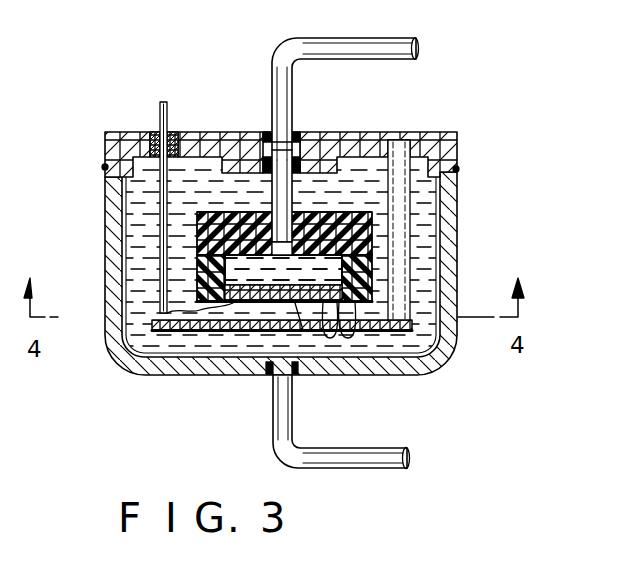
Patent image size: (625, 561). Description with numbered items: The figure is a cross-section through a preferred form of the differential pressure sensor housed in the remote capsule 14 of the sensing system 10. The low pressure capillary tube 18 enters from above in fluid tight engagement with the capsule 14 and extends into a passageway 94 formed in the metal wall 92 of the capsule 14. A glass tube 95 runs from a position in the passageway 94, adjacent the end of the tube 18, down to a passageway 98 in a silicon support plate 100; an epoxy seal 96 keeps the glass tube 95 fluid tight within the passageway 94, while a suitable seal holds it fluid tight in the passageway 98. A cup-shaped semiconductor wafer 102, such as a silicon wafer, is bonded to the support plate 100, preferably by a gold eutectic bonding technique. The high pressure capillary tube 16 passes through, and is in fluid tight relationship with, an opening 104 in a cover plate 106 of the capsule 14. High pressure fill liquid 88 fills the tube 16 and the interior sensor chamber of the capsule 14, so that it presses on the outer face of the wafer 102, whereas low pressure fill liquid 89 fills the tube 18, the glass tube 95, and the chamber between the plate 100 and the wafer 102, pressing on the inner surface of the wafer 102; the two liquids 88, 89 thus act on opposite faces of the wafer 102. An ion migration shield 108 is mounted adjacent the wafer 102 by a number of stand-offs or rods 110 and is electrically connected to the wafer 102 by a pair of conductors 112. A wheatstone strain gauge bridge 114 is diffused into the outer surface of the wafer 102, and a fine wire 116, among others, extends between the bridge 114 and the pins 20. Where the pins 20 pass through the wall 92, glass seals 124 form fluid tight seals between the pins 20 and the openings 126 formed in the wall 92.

The calibration apparatus 10 is at (253, 240).
The capsule 14 is at (462, 237).
The high pressure capillary tube 16 is at (370, 469).
The low pressure capillary tube 18 is at (329, 130).
The pins 20 is at (162, 118).
The high pressure fill liquid 88 is at (143, 268).
The low pressure fill liquid 89 is at (345, 275).
The metal wall 92 is at (107, 163).
The passageway 94 is at (293, 148).
The glass tube 95 is at (273, 200).
The epoxy seal 96 is at (300, 164).
The passageway 98 is at (262, 234).
The silicon support plate 100 is at (373, 238).
The semiconductor wafer 102 is at (281, 285).
The opening 104 is at (267, 361).
The cover plate 106 is at (112, 209).
The ion migration shield 108 is at (218, 332).
The stand-offs 110 is at (373, 299).
The conductors 112 is at (330, 338).
The wheatstone strain gauge bridge 114 is at (303, 330).
The fine wire 116 is at (160, 318).
The glass seals 124 is at (171, 147).
The openings 126 is at (183, 135).